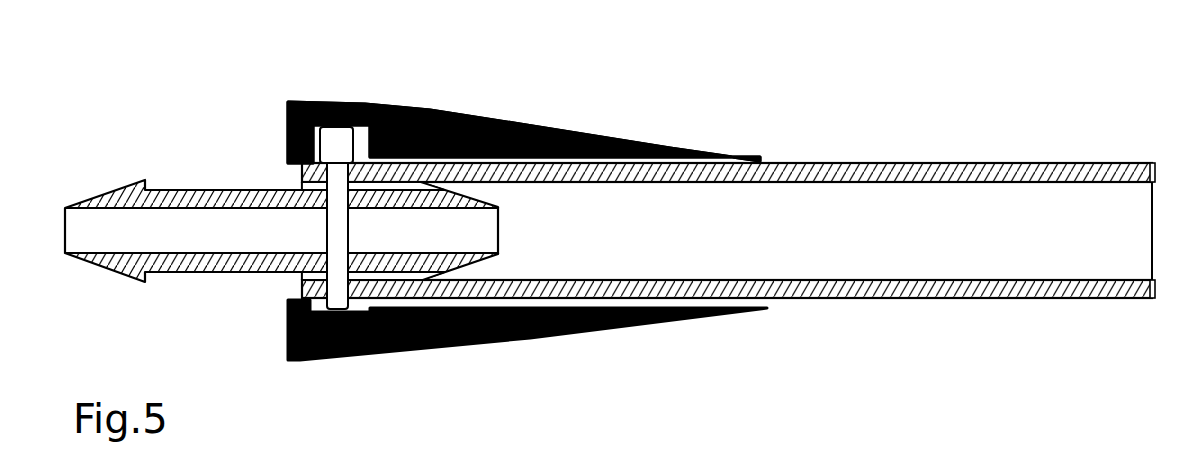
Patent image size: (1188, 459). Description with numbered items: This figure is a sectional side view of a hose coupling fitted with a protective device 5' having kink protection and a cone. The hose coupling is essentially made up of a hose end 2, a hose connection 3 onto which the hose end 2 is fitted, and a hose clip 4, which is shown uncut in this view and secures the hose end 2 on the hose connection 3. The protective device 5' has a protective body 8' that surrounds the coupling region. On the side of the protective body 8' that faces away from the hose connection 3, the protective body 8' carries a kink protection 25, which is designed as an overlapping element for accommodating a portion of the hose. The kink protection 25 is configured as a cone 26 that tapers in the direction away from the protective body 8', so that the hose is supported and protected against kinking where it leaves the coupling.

The hose end 2 is at (665, 264).
The hose connection 3 is at (305, 235).
The hose clip 4 is at (336, 233).
The protective device 5' is at (610, 187).
The protective body 8' is at (527, 184).
The kink protection 25 is at (457, 113).
The cone 26 is at (577, 132).